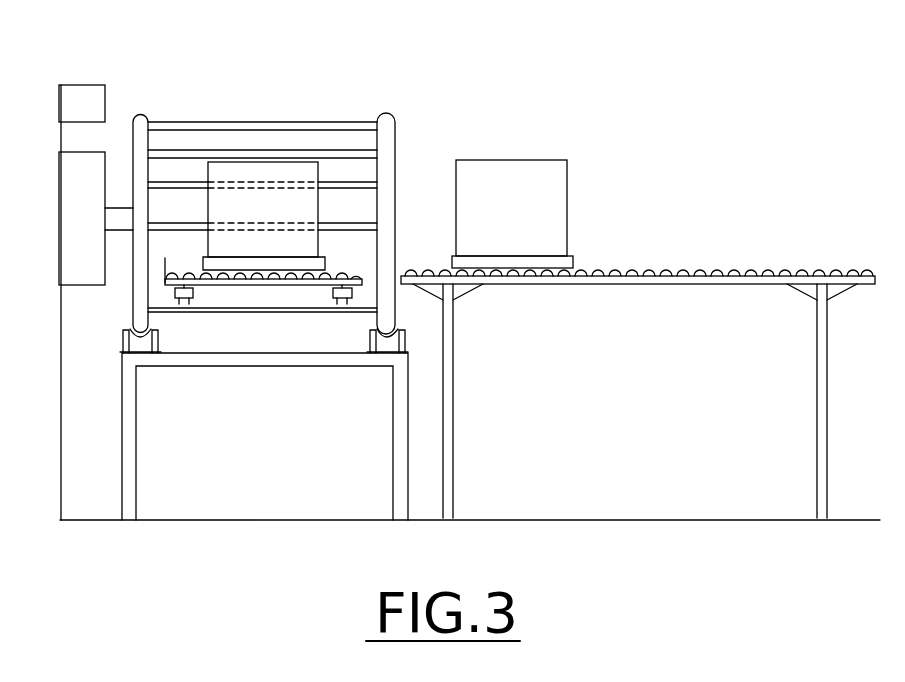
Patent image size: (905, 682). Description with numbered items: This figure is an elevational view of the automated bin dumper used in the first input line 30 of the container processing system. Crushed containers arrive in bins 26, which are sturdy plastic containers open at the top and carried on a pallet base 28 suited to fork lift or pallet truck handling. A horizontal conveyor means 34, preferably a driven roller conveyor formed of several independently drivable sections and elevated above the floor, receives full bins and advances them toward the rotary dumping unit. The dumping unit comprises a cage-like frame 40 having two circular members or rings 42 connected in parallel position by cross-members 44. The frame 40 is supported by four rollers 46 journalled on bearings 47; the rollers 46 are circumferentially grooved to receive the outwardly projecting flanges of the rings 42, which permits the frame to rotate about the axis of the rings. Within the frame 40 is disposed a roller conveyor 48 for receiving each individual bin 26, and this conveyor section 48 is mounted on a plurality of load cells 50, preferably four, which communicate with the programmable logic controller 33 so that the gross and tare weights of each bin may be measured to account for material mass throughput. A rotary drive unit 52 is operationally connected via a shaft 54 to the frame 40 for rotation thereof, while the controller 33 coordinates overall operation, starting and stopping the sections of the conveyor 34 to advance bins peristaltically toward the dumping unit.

The cage-like frame 40 is at (326, 44).
The first input line 30 is at (795, 80).
The circular members or rings 42 is at (155, 78).
The cross-members 44 is at (358, 223).
The bin 26 is at (278, 217).
The pallet base 28 is at (577, 262).
The programmable logic controller 33 is at (98, 119).
The rotary drive unit 52 is at (96, 193).
The shaft 54 is at (118, 218).
The roller conveyor 48 is at (165, 282).
The load cells 50 is at (193, 292).
The bearings 47 is at (158, 345).
The rollers 46 is at (143, 338).
The horizontal conveyor means 34 is at (712, 284).